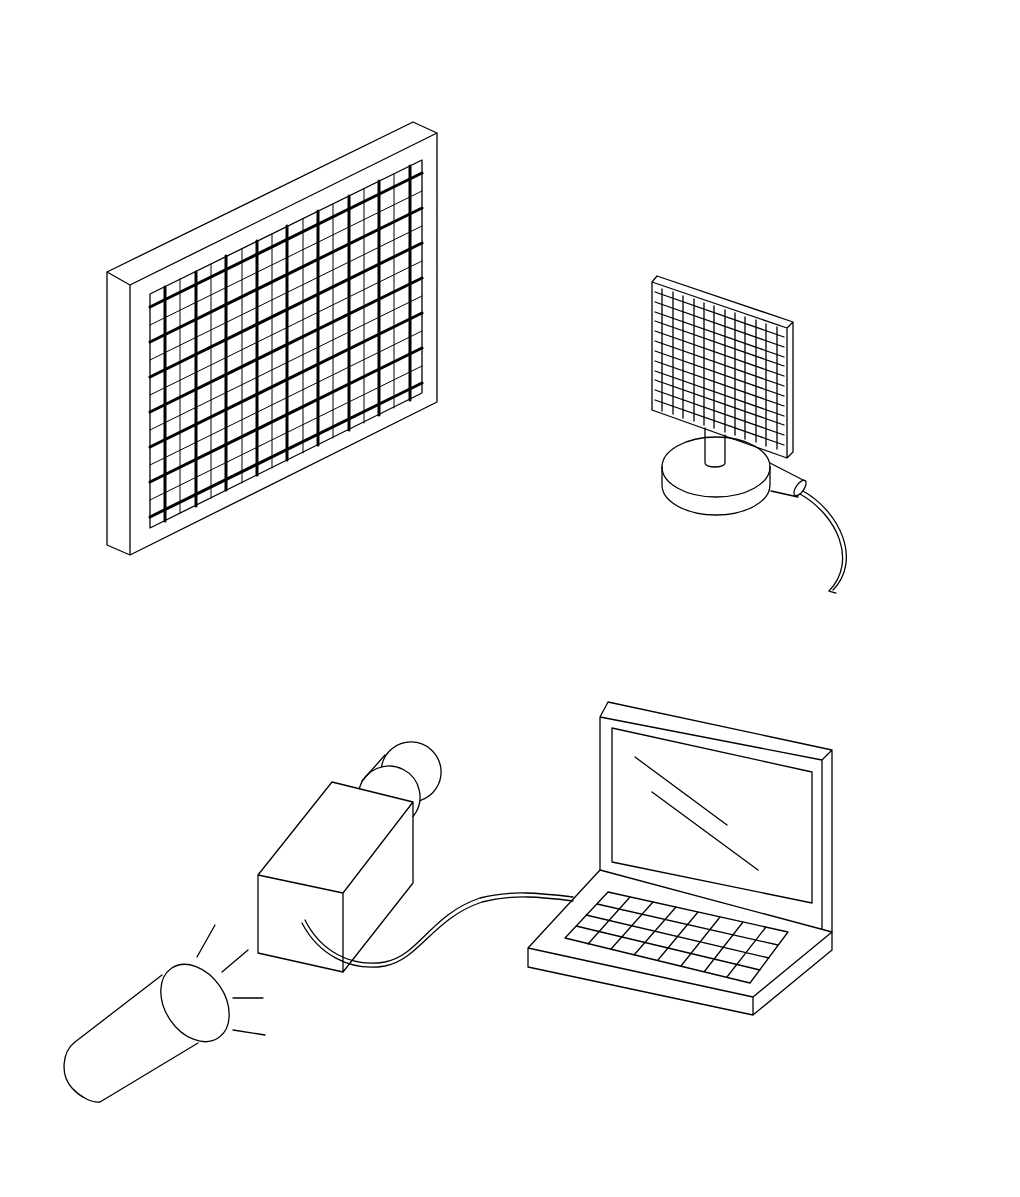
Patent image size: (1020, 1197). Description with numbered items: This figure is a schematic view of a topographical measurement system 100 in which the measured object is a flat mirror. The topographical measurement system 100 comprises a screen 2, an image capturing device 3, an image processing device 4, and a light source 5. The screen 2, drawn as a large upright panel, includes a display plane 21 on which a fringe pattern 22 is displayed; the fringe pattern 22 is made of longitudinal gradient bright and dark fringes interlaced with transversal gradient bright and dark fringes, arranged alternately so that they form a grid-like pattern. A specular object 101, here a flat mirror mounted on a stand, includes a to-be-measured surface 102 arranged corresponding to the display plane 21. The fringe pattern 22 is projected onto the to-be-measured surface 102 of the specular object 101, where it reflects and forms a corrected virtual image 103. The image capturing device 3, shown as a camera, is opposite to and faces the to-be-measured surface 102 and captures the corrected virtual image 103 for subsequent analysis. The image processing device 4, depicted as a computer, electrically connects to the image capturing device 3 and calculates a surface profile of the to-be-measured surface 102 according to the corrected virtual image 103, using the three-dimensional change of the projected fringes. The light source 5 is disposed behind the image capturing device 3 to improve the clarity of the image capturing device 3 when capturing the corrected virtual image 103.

The topographical measurement system 100 is at (152, 100).
The screen 2 is at (127, 263).
The display plane 21 is at (430, 198).
The fringe pattern 22 is at (367, 195).
The specular object 101 is at (738, 297).
The to-be-measured surface 102 is at (780, 395).
The corrected virtual image 103 is at (653, 305).
The image capturing device 3 is at (417, 848).
The image processing device 4 is at (705, 727).
The light source 5 is at (145, 985).